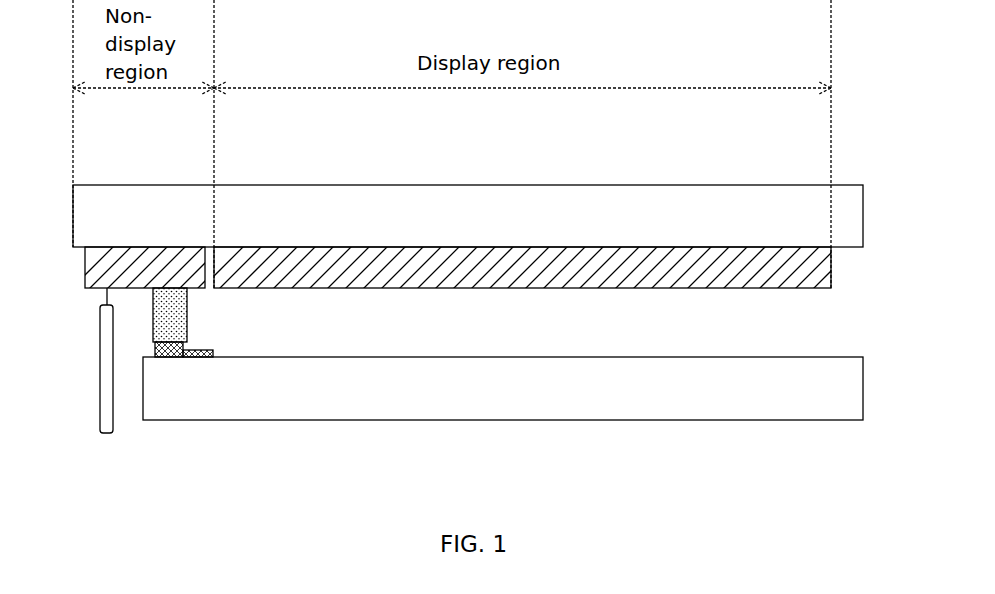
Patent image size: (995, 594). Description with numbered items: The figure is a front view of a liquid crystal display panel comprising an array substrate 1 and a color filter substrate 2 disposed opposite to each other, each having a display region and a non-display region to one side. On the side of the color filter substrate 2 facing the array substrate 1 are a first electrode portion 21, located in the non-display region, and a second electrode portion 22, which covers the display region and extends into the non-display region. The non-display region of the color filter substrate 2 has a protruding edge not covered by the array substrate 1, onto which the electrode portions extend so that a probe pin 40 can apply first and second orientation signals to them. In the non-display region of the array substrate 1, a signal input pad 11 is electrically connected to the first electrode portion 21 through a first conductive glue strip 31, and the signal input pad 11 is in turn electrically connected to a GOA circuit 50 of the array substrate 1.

The array substrate 1 is at (826, 395).
The signal input pad 11 is at (163, 359).
The color filter substrate 2 is at (842, 219).
The first electrode portion 21 is at (155, 263).
The second electrode portion 22 is at (495, 272).
The first conductive glue strip 31 is at (187, 313).
The probe pin 40 is at (105, 358).
The GOA circuit 50 is at (197, 360).